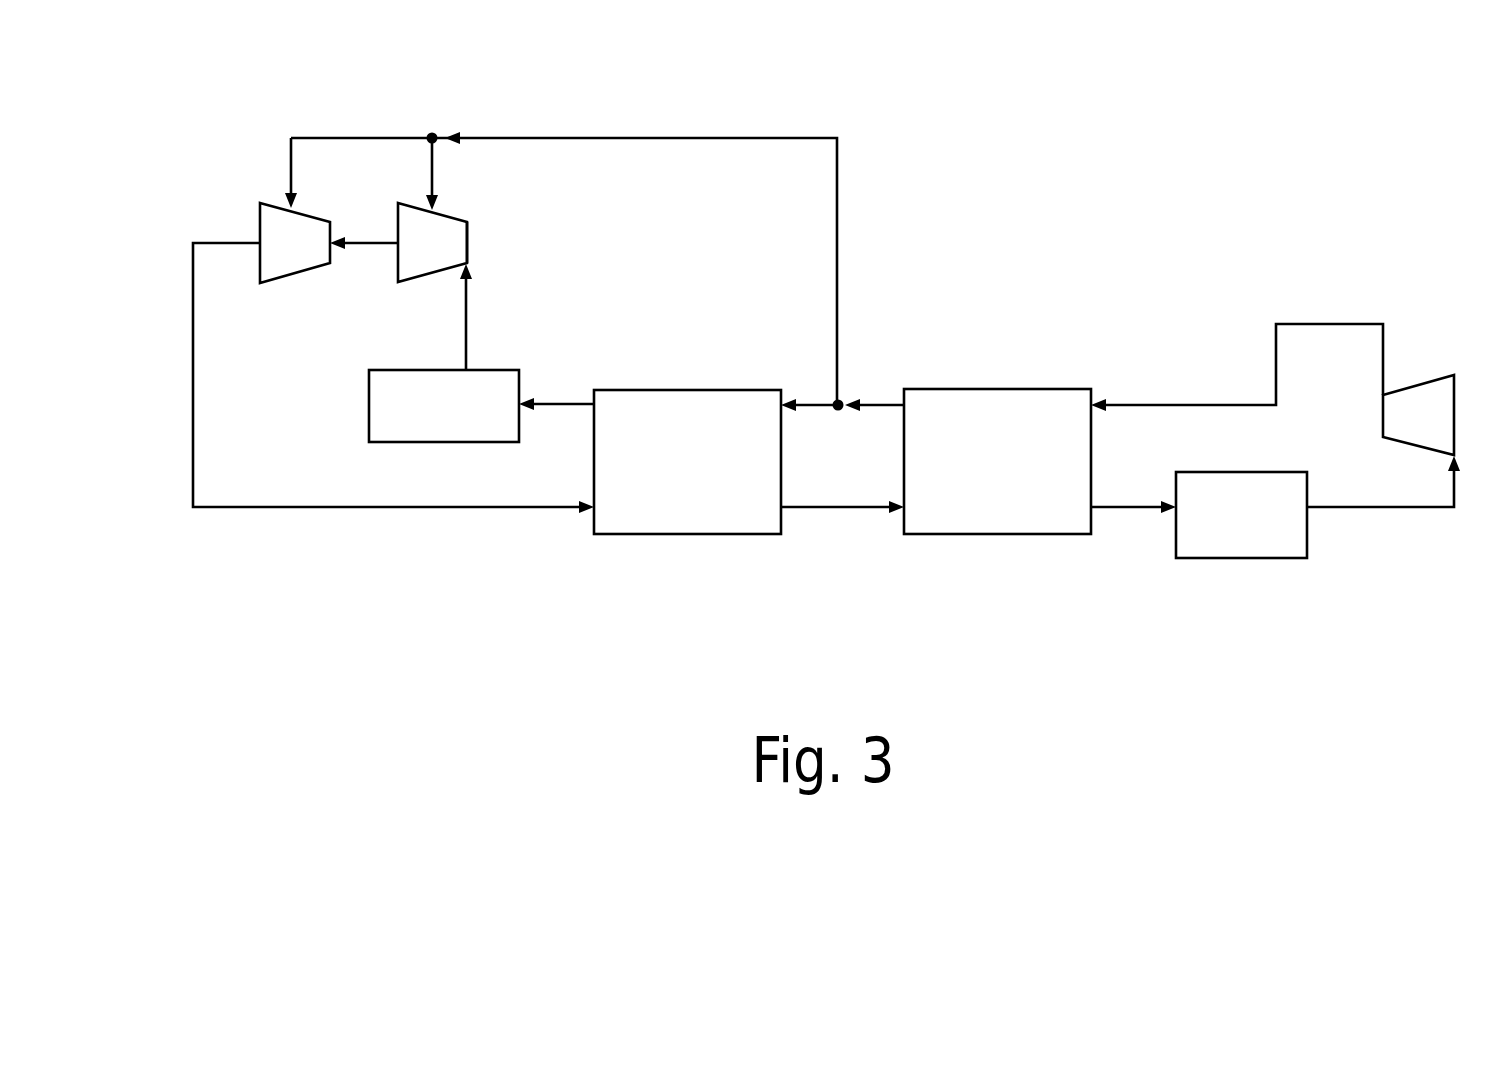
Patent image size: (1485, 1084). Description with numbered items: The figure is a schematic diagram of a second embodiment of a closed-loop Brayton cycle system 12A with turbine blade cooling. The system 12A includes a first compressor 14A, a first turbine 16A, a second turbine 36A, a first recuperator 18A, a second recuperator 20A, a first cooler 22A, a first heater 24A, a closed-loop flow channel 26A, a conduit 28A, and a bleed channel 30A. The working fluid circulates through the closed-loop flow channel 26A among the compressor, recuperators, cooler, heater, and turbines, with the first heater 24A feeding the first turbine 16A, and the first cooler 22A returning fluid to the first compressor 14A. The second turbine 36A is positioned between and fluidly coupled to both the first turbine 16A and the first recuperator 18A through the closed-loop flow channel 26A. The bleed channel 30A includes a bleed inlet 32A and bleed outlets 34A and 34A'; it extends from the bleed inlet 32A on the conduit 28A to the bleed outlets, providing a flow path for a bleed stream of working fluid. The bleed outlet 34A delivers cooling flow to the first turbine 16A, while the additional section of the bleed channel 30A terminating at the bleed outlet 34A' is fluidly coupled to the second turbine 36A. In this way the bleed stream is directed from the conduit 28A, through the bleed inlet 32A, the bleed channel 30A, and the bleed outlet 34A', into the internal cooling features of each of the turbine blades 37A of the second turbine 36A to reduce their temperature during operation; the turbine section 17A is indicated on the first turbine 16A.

The closed-loop Brayton cycle system 12A is at (1142, 206).
The first compressor 14A is at (1432, 395).
The first turbine 16A is at (390, 215).
The turbine section 17A is at (445, 227).
The first recuperator 18A is at (665, 522).
The second recuperator 20A is at (988, 515).
The first cooler 22A is at (1247, 548).
The first heater 24A is at (420, 443).
The closed-loop flow channel 26A is at (192, 407).
The conduit 28A is at (882, 400).
The bleed channel 30A is at (840, 202).
The bleed inlet 32A is at (836, 402).
The bleed outlet 34A is at (368, 148).
The bleed outlet 34A' is at (233, 152).
The second turbine 36A is at (272, 217).
The turbine blades 37A is at (268, 259).